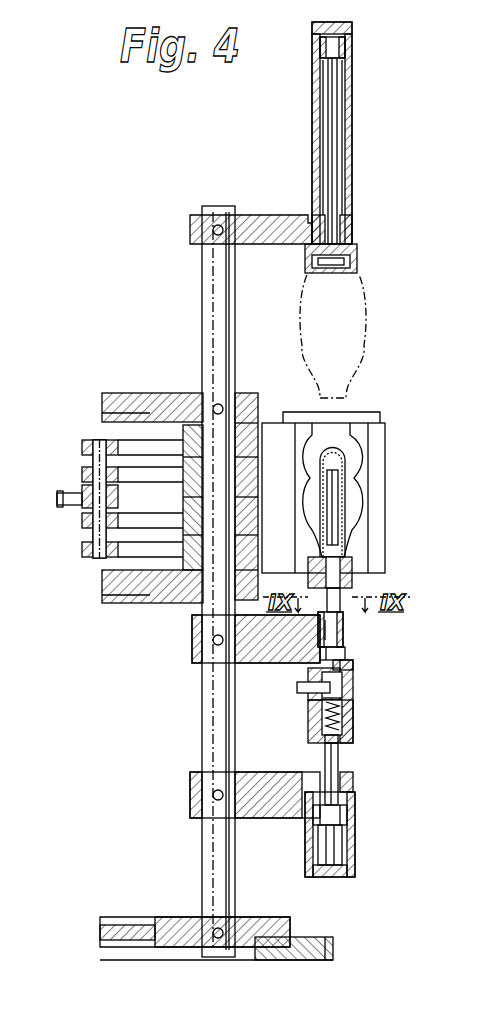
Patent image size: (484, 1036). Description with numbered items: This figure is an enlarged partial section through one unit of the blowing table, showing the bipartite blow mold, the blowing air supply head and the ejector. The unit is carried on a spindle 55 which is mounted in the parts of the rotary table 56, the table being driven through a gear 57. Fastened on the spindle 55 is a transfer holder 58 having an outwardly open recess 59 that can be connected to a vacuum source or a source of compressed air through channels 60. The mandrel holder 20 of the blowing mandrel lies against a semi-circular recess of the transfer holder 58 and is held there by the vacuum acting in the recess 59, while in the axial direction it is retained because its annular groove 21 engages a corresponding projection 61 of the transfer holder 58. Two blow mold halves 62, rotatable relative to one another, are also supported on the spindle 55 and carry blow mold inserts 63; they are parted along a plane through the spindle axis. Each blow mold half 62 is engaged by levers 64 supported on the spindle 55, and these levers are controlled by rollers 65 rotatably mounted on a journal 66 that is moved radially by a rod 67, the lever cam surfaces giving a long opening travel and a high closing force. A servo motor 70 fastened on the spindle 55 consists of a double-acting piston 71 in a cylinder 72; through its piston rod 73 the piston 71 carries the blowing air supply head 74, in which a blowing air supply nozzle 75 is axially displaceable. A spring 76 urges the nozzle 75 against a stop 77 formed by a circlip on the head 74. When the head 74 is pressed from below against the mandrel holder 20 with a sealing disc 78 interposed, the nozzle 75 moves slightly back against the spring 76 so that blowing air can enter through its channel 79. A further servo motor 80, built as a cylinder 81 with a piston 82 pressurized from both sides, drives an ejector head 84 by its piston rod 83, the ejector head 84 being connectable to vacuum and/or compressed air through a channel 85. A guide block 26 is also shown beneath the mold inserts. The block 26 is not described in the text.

The mandrel holder 20 is at (345, 640).
The annular groove 21 is at (345, 653).
The guide block 26 is at (352, 565).
The spindle 55 is at (202, 718).
The parts of the rotary table 56 is at (128, 405).
The gear 57 is at (333, 950).
The transfer holder 58 is at (192, 640).
The recess 59 is at (345, 636).
The channels 60 is at (320, 634).
The projection 61 is at (322, 655).
The blow mold halves 62 is at (385, 430).
The blow mold inserts 63 is at (362, 462).
The levers 64 is at (183, 478).
The rollers 65 is at (82, 447).
The journal 66 is at (96, 556).
The rod 67 is at (65, 505).
The servo motor 70 is at (355, 848).
The double-acting piston 71 is at (340, 815).
The cylinder 72 is at (318, 852).
The piston rod 73 is at (325, 757).
The blowing air supply head 74 is at (352, 745).
The blowing air supply nozzle 75 is at (345, 705).
The spring 76 is at (353, 735).
The stop 77 is at (353, 685).
The sealing disc 78 is at (353, 667).
The channel 79 is at (300, 693).
The servo motor 80 is at (352, 165).
The cylinder 81 is at (320, 130).
The piston 82 is at (345, 48).
The piston rod 83 is at (337, 116).
The ejector head 84 is at (357, 248).
The channel 85 is at (312, 263).